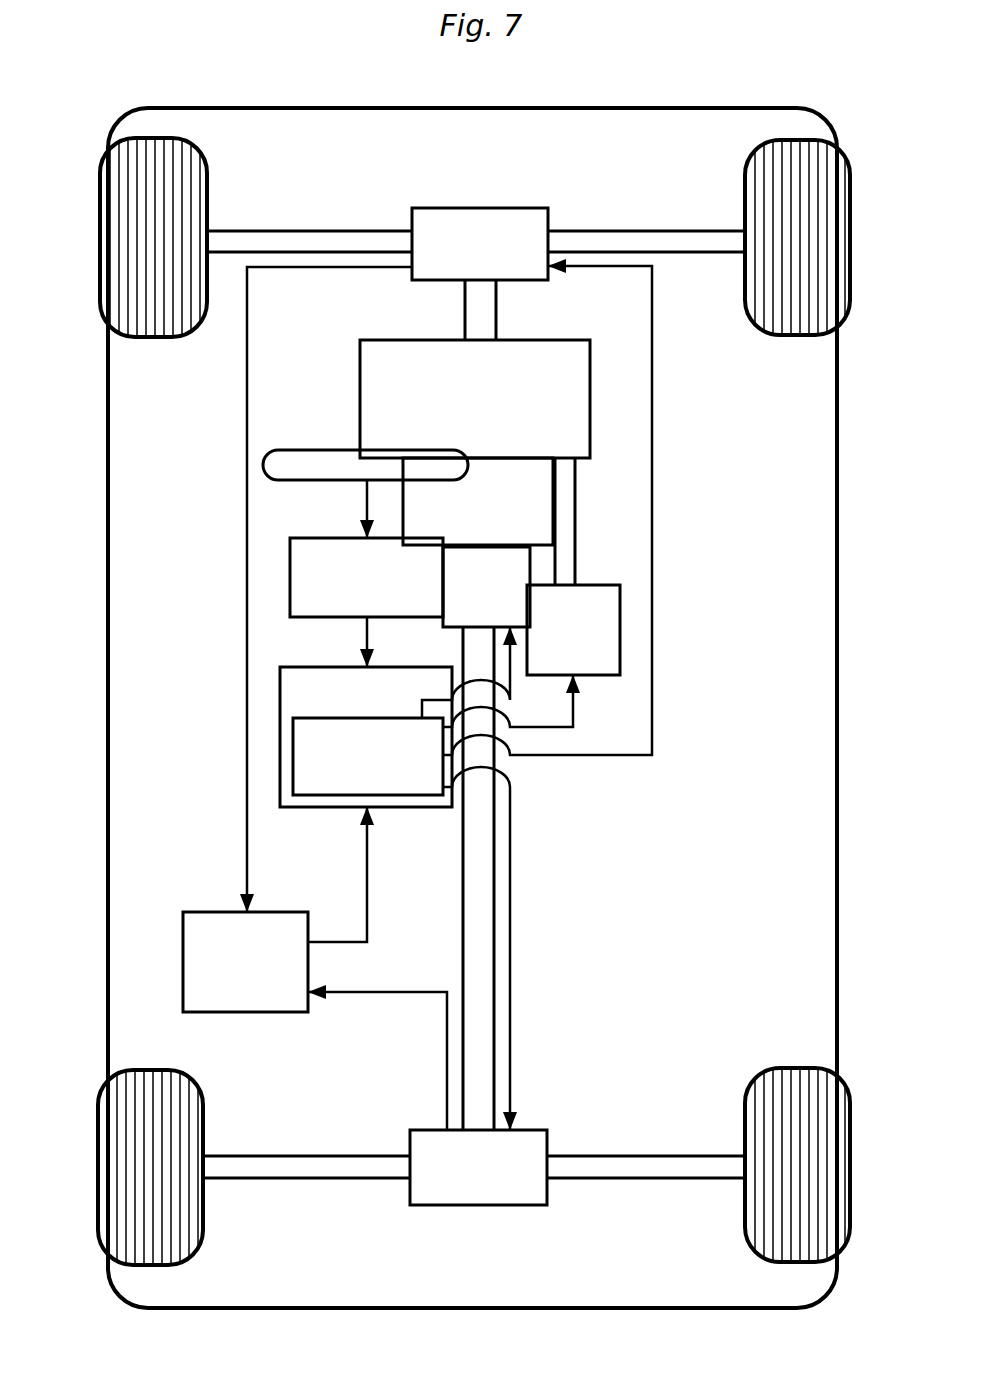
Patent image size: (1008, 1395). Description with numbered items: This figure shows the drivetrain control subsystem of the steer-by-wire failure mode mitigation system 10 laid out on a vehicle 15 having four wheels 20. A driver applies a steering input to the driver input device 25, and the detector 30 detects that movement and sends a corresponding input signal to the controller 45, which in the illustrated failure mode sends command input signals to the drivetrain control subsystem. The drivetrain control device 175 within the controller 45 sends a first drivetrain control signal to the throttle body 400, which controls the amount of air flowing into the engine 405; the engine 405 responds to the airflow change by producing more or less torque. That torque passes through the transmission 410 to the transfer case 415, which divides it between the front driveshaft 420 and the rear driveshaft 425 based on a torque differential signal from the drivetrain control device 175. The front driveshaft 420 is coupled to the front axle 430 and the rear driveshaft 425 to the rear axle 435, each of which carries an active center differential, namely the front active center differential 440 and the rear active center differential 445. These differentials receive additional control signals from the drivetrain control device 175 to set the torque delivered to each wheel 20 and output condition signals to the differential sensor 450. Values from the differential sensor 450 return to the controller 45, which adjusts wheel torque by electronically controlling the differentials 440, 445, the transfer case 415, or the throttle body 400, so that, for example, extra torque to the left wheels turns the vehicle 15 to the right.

The steer-by-wire failure mode mitigation system 10 is at (677, 69).
The vehicle 15 is at (837, 702).
The wheels 20 is at (100, 237).
The driver input device 25 is at (342, 448).
The detector 30 is at (288, 572).
The controller 45 is at (395, 808).
The drivetrain control device 175 is at (335, 795).
The throttle body 400 is at (592, 677).
The engine 405 is at (358, 350).
The transmission 410 is at (557, 505).
The transfer case 415 is at (532, 562).
The front driveshaft 420 is at (463, 320).
The rear driveshaft 425 is at (463, 903).
The front axle 430 is at (308, 231).
The rear axle 435 is at (315, 1178).
The front active center differential 440 is at (475, 207).
The rear active center differential 445 is at (478, 1205).
The differential sensor 450 is at (247, 1012).